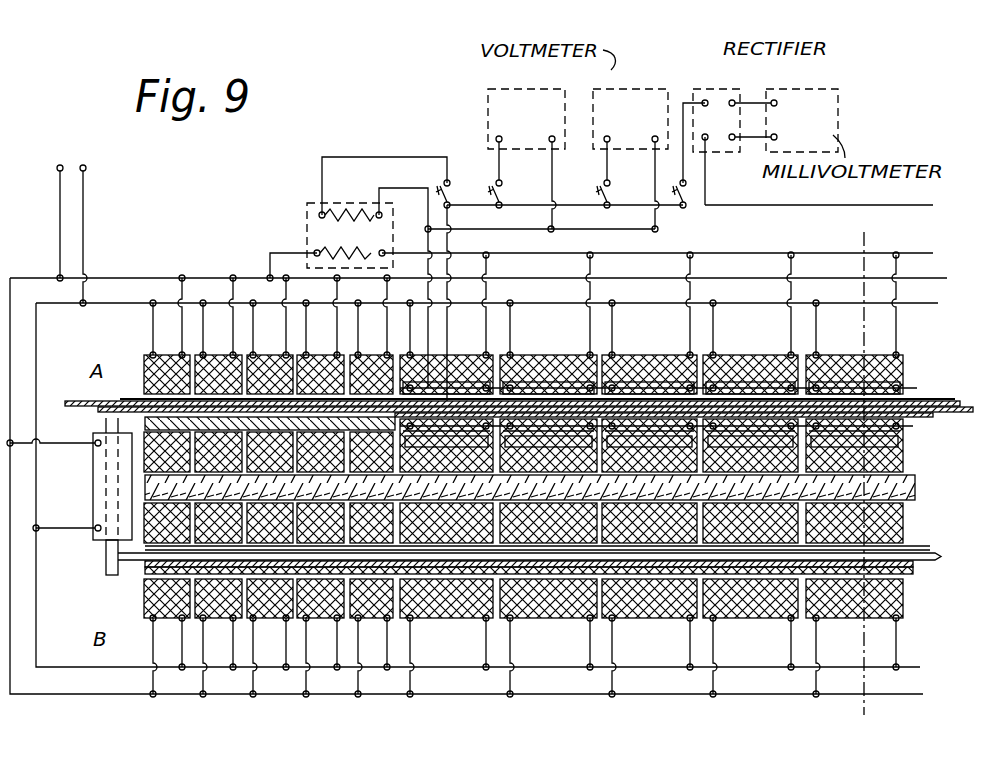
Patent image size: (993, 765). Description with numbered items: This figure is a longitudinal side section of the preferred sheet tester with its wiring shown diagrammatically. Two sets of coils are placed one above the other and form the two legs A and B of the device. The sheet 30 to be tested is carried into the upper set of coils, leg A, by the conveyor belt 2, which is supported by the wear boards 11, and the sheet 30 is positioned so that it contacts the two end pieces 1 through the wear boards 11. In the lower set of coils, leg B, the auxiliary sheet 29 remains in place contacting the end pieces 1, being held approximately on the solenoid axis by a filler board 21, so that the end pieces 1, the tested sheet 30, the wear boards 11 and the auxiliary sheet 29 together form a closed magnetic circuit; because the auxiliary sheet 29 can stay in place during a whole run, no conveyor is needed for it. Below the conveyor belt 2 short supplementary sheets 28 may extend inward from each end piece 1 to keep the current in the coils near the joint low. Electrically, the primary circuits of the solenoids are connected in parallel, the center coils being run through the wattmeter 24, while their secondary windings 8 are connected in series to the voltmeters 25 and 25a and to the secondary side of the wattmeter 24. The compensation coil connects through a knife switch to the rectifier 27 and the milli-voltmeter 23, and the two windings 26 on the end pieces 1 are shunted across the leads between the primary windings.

The end piece 1 is at (118, 473).
The conveyor belt 2 is at (100, 402).
The secondary winding 8 is at (890, 711).
The wear board 11 is at (915, 428).
The filler board 21 is at (140, 574).
The milli-voltmeter 23 is at (785, 94).
The wattmeter 24 is at (308, 242).
The voltmeter 25 is at (530, 98).
The voltmeter 25a is at (620, 98).
The winding 26 is at (96, 512).
The rectifier 27 is at (714, 96).
The supplementary sheet 28 is at (104, 418).
The auxiliary sheet 29 is at (930, 557).
The sheet 30 is at (121, 404).